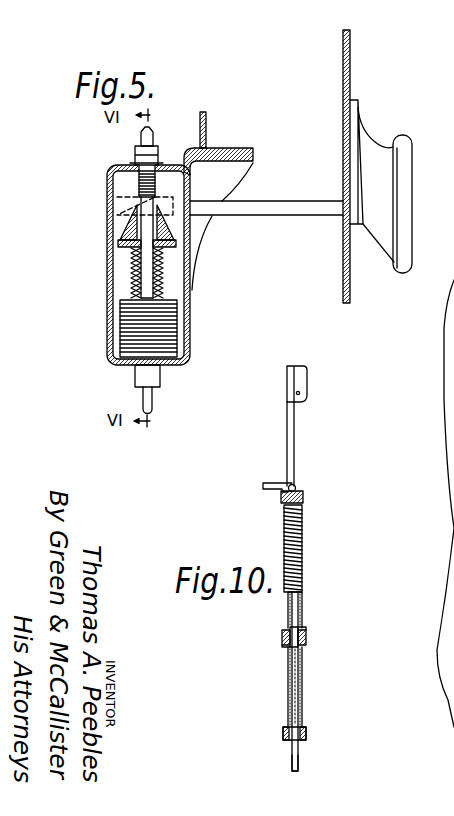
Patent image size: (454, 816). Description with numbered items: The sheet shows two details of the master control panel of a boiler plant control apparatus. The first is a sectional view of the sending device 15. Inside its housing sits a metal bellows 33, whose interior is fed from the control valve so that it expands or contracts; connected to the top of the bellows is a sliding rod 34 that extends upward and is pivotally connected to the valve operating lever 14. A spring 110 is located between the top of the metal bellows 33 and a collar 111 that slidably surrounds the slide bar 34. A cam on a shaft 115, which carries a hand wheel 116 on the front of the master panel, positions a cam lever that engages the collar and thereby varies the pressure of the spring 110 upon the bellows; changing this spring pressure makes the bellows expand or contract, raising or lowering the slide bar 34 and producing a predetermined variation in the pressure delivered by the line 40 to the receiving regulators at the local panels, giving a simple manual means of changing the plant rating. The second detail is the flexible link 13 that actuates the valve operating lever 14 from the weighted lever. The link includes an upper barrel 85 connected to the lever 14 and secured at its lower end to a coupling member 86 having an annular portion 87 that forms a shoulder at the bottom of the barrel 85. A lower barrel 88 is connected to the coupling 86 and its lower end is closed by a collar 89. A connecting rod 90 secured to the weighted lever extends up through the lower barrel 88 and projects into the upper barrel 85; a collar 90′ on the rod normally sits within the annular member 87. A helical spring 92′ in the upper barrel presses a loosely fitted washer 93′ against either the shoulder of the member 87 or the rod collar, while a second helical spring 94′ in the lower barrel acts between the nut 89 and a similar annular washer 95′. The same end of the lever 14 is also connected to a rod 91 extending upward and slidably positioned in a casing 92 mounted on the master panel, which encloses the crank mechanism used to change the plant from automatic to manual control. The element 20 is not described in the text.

In FIG. 5, the sending device 15 is at (202, 230).
In FIG. 5, the metal bellows 33 is at (133, 333).
In FIG. 5, the sliding rod 34 is at (143, 243).
In FIG. 5, the line 40 is at (150, 405).
In FIG. 5, the spring 110 is at (160, 270).
In FIG. 5, the collar 111 is at (125, 247).
In FIG. 5, the shaft 115 is at (272, 202).
In FIG. 5, the hand wheel 116 is at (405, 187).
In FIG. 10, the flexible link 13 is at (292, 753).
In FIG. 10, the valve operating lever 14 is at (273, 490).
In FIG. 10, the tube 20 is at (300, 625).
In FIG. 10, the barrel 85 is at (303, 530).
In FIG. 10, the coupling member 86 is at (305, 638).
In FIG. 10, the annular portion 87 is at (283, 638).
In FIG. 10, the lower barrel 88 is at (300, 678).
In FIG. 10, the collar 89 is at (303, 733).
In FIG. 10, the connecting rod 90 is at (300, 762).
In FIG. 10, the collar 90′ is at (306, 645).
In FIG. 10, the rod 91 is at (295, 442).
In FIG. 10, the casing 92 is at (298, 380).
In FIG. 10, the helical spring 92′ is at (303, 507).
In FIG. 10, the washer 93′ is at (302, 628).
In FIG. 10, the second helical spring 94′ is at (303, 694).
In FIG. 10, the annular washer 95′ is at (287, 647).